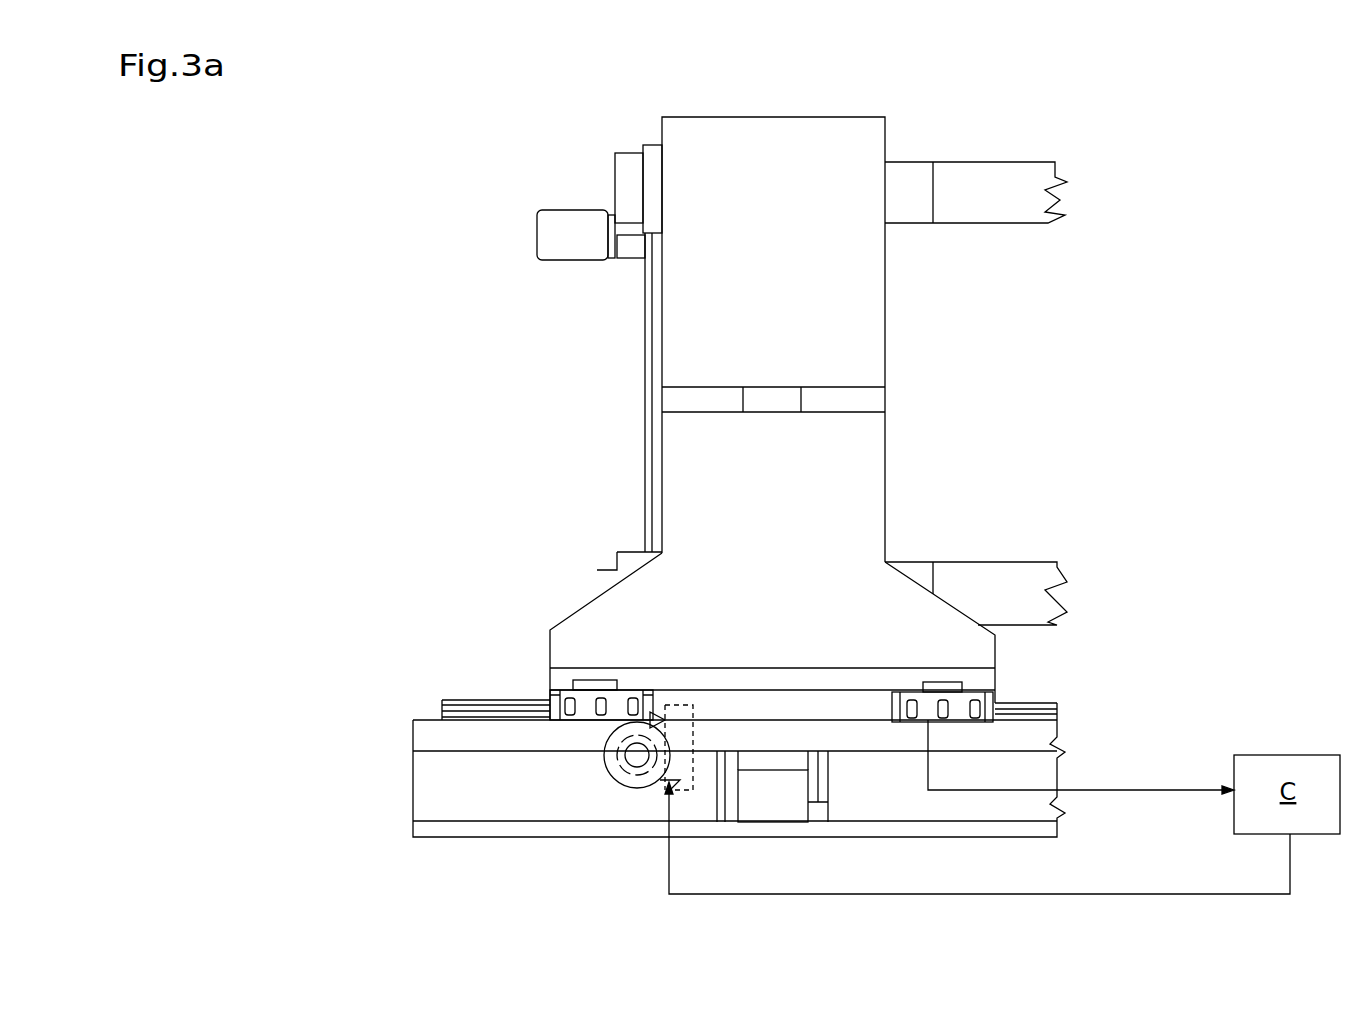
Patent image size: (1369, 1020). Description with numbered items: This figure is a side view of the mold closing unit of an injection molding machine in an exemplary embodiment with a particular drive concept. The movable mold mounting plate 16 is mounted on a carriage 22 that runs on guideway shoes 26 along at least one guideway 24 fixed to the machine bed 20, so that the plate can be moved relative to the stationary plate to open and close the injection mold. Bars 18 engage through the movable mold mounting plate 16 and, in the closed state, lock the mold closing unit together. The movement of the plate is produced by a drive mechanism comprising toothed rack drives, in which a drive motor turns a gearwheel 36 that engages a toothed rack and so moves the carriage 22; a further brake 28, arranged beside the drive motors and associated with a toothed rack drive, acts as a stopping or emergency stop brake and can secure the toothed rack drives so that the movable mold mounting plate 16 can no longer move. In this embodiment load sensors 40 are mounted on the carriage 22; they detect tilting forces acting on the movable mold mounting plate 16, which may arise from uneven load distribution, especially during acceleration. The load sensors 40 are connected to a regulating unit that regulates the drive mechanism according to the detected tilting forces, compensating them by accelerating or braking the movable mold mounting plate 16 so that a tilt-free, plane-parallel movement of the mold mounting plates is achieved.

The movable mold mounting plate 16 is at (823, 340).
The bars 18 is at (1004, 196).
The machine bed 20 is at (458, 738).
The carriage 22 is at (858, 683).
The guideway 24 is at (1028, 720).
The guideway shoes 26 is at (958, 715).
The brake 28 is at (775, 795).
The gearwheel 36 is at (625, 740).
The load sensors 40 is at (943, 683).